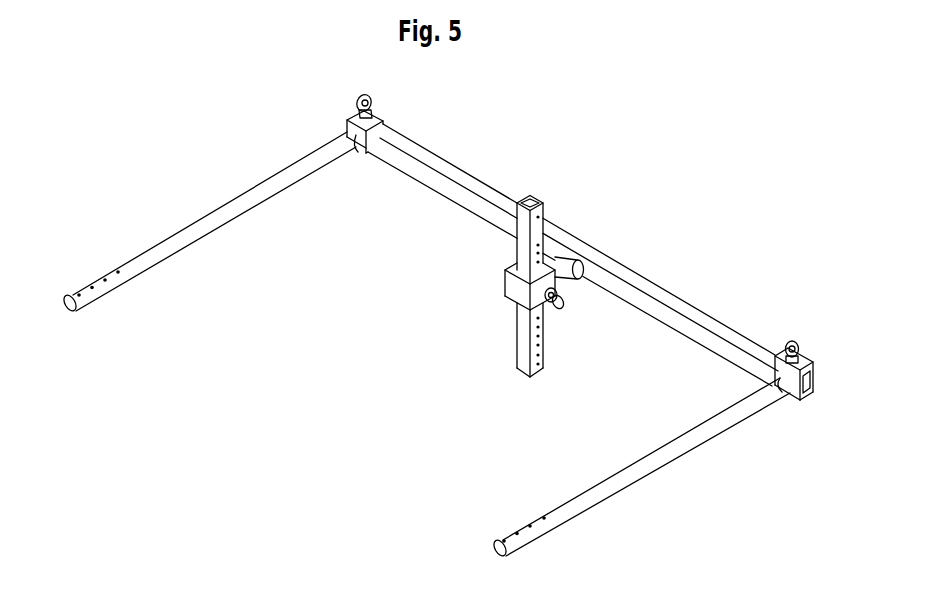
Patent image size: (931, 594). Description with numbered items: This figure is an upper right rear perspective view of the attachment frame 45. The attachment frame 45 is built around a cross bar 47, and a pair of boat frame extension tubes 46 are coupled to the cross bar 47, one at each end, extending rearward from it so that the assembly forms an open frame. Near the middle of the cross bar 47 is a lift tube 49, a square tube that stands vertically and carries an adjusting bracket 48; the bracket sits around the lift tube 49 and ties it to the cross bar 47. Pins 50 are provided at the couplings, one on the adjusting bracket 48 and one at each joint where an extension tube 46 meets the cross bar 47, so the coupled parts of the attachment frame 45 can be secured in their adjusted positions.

The attachment frame 45 is at (640, 265).
The boat frame extension tubes 46 is at (153, 252).
The cross bar 47 is at (692, 315).
The adjusting bracket 48 is at (509, 291).
The lift tube 49 is at (519, 243).
The pins 50 is at (374, 112).